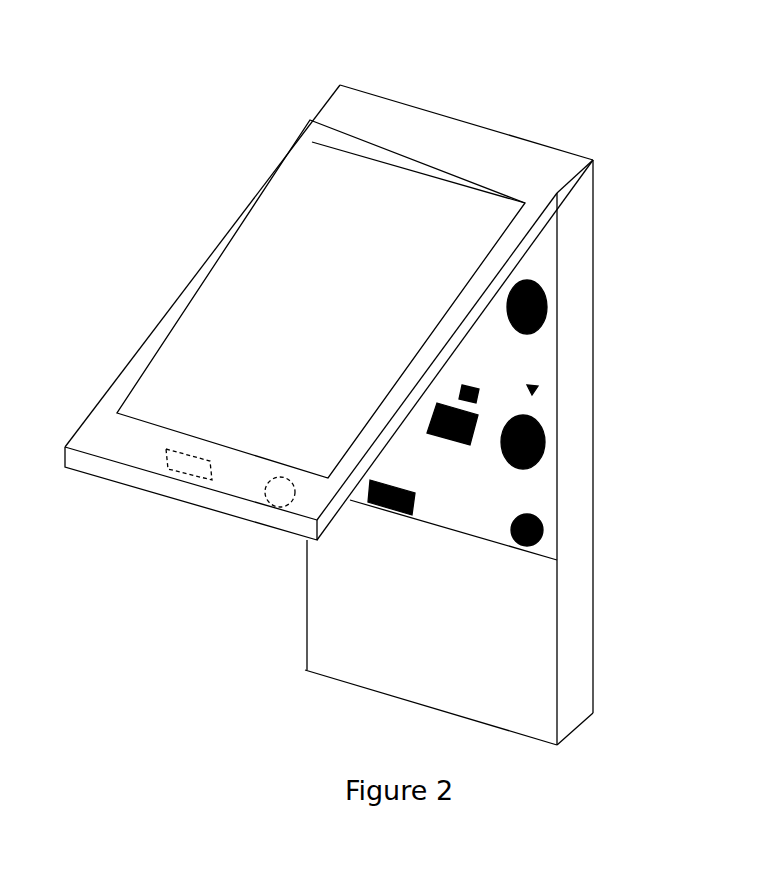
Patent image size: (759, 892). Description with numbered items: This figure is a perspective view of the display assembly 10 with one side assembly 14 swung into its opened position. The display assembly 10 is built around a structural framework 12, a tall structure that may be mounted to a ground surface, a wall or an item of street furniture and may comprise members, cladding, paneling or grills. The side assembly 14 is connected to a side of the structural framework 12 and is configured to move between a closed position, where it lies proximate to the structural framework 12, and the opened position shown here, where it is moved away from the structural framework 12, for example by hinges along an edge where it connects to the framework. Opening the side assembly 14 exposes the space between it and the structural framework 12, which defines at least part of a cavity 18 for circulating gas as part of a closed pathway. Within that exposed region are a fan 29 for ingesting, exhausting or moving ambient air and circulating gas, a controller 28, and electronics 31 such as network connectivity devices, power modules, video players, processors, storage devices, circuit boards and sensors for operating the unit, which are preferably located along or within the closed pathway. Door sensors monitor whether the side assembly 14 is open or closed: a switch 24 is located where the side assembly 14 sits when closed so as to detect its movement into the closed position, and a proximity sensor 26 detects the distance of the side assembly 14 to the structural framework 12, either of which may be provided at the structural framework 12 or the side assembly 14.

The display assembly 10 is at (560, 109).
The structural framework 12 is at (575, 330).
The side assembly 14 is at (303, 228).
The cavity 18 is at (533, 390).
The switch 24 is at (182, 475).
The proximity sensor 26 is at (273, 502).
The controller 28 is at (547, 293).
The fan 29 is at (540, 465).
The electronics 31 is at (448, 440).